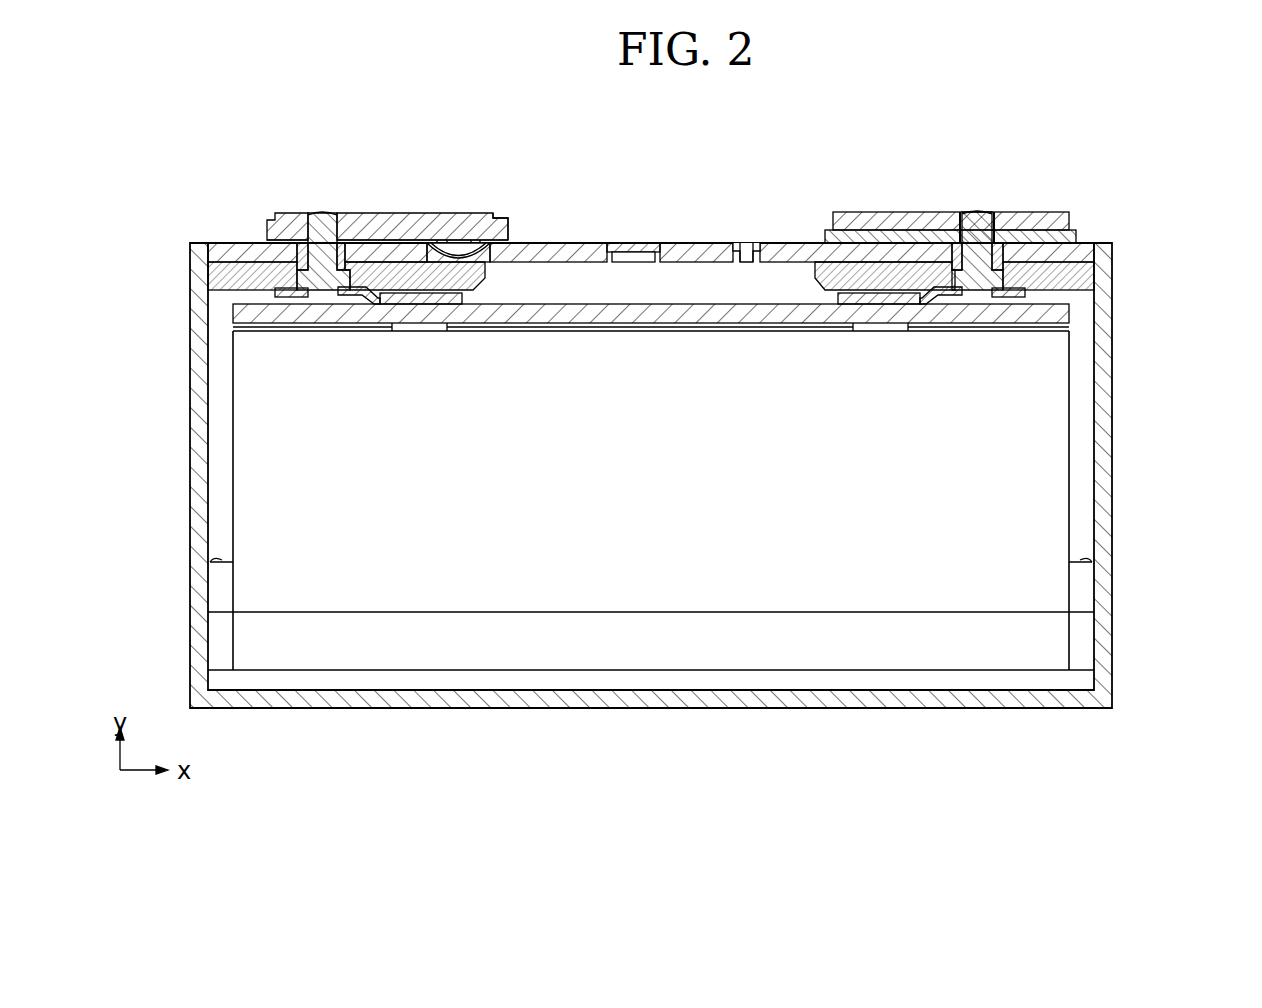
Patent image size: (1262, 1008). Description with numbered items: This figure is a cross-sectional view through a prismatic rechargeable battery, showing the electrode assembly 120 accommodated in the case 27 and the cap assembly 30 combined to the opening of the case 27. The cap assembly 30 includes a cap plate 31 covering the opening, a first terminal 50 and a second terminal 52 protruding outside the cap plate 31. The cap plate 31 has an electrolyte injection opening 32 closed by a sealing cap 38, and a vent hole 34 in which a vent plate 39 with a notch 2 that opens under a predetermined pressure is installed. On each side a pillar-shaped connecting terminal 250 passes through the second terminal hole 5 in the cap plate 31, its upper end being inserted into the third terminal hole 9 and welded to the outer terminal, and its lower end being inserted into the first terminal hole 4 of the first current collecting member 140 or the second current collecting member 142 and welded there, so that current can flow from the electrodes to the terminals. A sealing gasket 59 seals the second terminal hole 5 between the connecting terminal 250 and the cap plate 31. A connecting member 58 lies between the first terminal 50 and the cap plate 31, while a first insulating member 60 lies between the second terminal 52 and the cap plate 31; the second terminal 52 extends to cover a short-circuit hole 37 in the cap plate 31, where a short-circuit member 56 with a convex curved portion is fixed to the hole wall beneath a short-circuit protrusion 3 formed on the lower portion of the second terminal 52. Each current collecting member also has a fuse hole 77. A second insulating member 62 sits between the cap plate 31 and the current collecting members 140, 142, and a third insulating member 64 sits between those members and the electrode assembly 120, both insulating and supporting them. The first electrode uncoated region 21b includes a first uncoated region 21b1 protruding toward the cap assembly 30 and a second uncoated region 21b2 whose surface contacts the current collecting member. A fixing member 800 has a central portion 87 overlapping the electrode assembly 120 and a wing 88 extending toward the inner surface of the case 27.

The notch 2 is at (625, 243).
The short-circuit protrusion 3 is at (490, 243).
The first terminal hole 4 is at (326, 290).
The second terminal hole 5 is at (298, 260).
The third terminal hole 9 is at (327, 213).
The case 27 is at (1102, 437).
The cap assembly 30 is at (697, 230).
The cap plate 31 is at (545, 248).
The electrolyte injection opening 32 is at (745, 243).
The vent hole 34 is at (640, 305).
The short-circuit hole 37 is at (433, 243).
The sealing cap 38 is at (750, 243).
The vent plate 39 is at (653, 243).
The first terminal 50 is at (1055, 218).
The second terminal 52 is at (397, 213).
The short-circuit member 56 is at (461, 243).
The connecting member 58 is at (1072, 237).
The sealing gasket 59 is at (296, 266).
The first insulating member 60 is at (523, 243).
The second insulating member 62 is at (220, 278).
The third insulating member 64 is at (567, 313).
The fuse hole 77 is at (373, 297).
The central portion 87 is at (1000, 647).
The wing 88 is at (1082, 592).
The electrode assembly 120 is at (1029, 498).
The first current collecting member 140 is at (845, 305).
The second current collecting member 142 is at (452, 300).
The connecting terminal 250 is at (322, 214).
The fixing member 800 is at (718, 614).
The first electrode uncoated region 21b is at (650, 374).
The first uncoated region 21b1 is at (458, 412).
The second uncoated region 21b2 is at (427, 300).